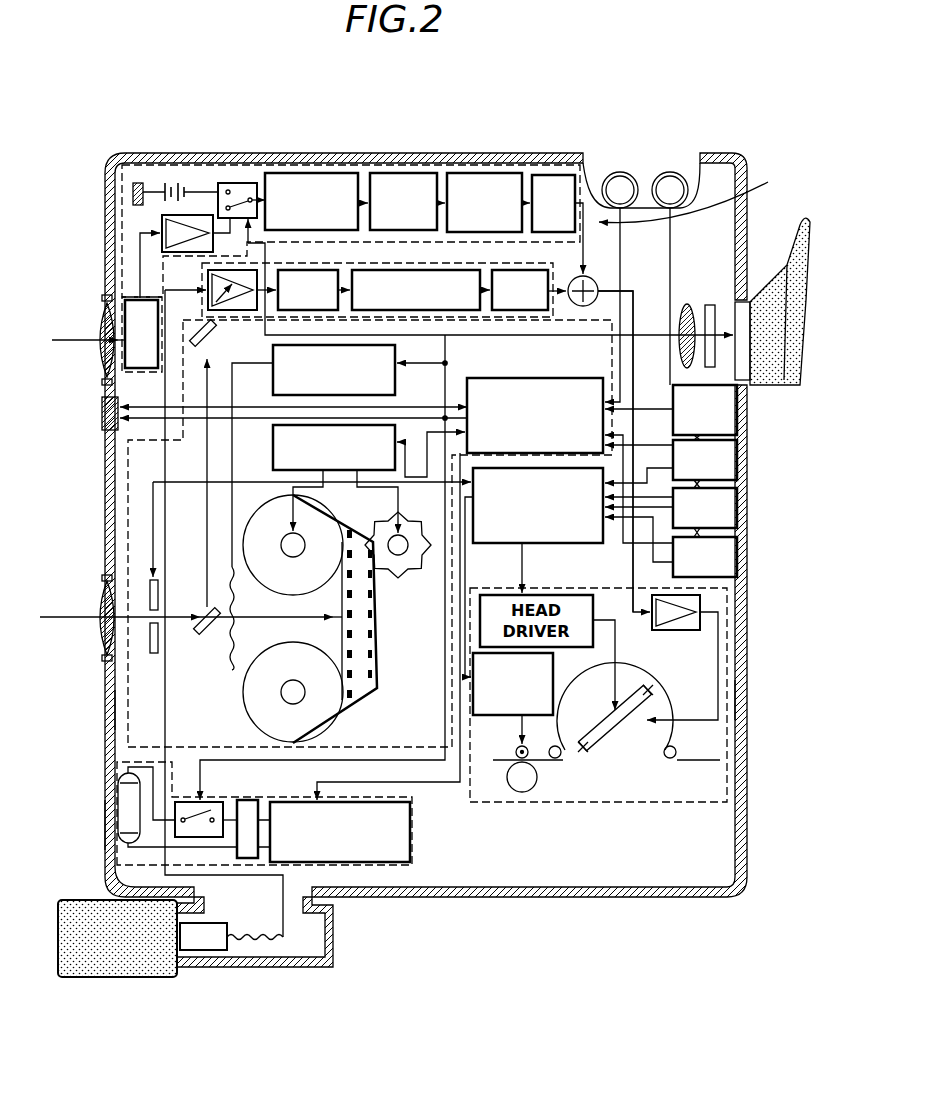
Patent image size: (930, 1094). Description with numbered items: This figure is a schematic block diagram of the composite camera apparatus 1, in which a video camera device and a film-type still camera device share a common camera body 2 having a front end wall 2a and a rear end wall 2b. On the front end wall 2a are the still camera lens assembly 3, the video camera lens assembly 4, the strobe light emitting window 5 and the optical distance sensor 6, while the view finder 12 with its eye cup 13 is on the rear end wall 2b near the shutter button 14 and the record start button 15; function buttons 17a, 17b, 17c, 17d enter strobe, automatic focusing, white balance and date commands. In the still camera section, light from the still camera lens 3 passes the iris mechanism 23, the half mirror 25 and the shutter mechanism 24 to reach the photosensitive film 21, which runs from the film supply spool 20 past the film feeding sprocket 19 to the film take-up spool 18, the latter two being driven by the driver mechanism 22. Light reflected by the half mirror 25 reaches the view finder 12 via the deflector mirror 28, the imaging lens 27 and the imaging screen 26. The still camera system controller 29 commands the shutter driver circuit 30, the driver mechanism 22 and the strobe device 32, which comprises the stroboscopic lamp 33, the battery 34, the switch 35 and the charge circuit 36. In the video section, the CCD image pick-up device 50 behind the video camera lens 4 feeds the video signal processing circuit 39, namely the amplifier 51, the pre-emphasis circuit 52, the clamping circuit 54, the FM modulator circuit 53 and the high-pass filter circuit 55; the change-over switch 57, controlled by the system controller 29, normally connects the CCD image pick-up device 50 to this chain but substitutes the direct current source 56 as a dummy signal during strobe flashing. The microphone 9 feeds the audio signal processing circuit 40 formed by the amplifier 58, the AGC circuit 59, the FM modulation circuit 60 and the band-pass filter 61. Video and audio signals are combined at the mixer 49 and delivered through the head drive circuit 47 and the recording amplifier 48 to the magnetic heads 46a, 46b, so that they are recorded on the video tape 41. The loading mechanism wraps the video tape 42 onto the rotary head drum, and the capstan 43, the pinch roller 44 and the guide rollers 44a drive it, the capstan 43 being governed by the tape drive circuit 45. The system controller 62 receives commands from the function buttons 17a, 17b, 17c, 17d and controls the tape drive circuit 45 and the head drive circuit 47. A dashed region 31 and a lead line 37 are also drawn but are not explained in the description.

The composite camera apparatus 1 is at (121, 146).
The camera body 2 is at (160, 155).
The front end wall 2a is at (105, 712).
The rear end wall 2b is at (747, 698).
The still camera lens assembly 3 is at (97, 633).
The video camera lens assembly 4 is at (104, 356).
The strobe light emitting window 5 is at (104, 826).
The optical distance sensor 6 is at (102, 413).
The microphone 9 is at (203, 950).
The view finder 12 is at (742, 300).
The eye cup 13 is at (790, 286).
The shutter button 14 is at (620, 172).
The record start button 15 is at (670, 172).
The function button 17a is at (737, 418).
The function button 17b is at (737, 463).
The function button 17c is at (737, 510).
The function button 17d is at (737, 553).
The film take-up spool 18 is at (290, 543).
The film feeding sprocket 19 is at (400, 571).
The film supply spool 20 is at (290, 692).
The photosensitive film 21 is at (377, 640).
The driver mechanism 22 is at (273, 447).
The iris mechanism 23 is at (150, 592).
The shutter mechanism 24 is at (235, 628).
The half mirror 25 is at (213, 637).
The imaging screen 26 is at (710, 305).
The imaging lens 27 is at (687, 305).
The deflector mirror 28 is at (205, 350).
The still camera system controller 29 is at (488, 378).
The shutter driver circuit 30 is at (395, 375).
The camera section 31 is at (128, 490).
The strobe device 32 is at (393, 865).
The stroboscopic lamp 33 is at (105, 805).
The battery 34 is at (255, 800).
The switch 35 is at (222, 802).
The charge circuit 36 is at (410, 810).
The sound input path 37 is at (701, 197).
The video signal processing circuit 39 is at (521, 165).
The audio signal processing circuit 40 is at (585, 274).
The video tape 41 is at (672, 706).
The video tape 42 is at (670, 758).
The capstan 43 is at (517, 750).
The pinch roller 44 is at (525, 792).
The guide rollers 44a is at (556, 758).
The tape drive circuit 45 is at (553, 662).
The magnetic head 46a is at (647, 689).
The magnetic head 46b is at (585, 753).
The head drive circuit 47 is at (575, 567).
The recording amplifier 48 is at (655, 625).
The mixer 49 is at (597, 278).
The CCD image pick-up device 50 is at (106, 294).
The amplifier 51 is at (160, 232).
The pre-emphasis circuit 52 is at (313, 171).
The FM modulator circuit 53 is at (488, 171).
The clamping circuit 54 is at (403, 171).
The high-pass filter circuit 55 is at (548, 173).
The direct current source 56 is at (184, 172).
The change-over switch 57 is at (243, 181).
The amplifier 58 is at (212, 277).
The AGC circuit 59 is at (330, 270).
The FM modulation circuit 60 is at (447, 270).
The band-pass filter 61 is at (540, 270).
The system controller 62 is at (505, 543).